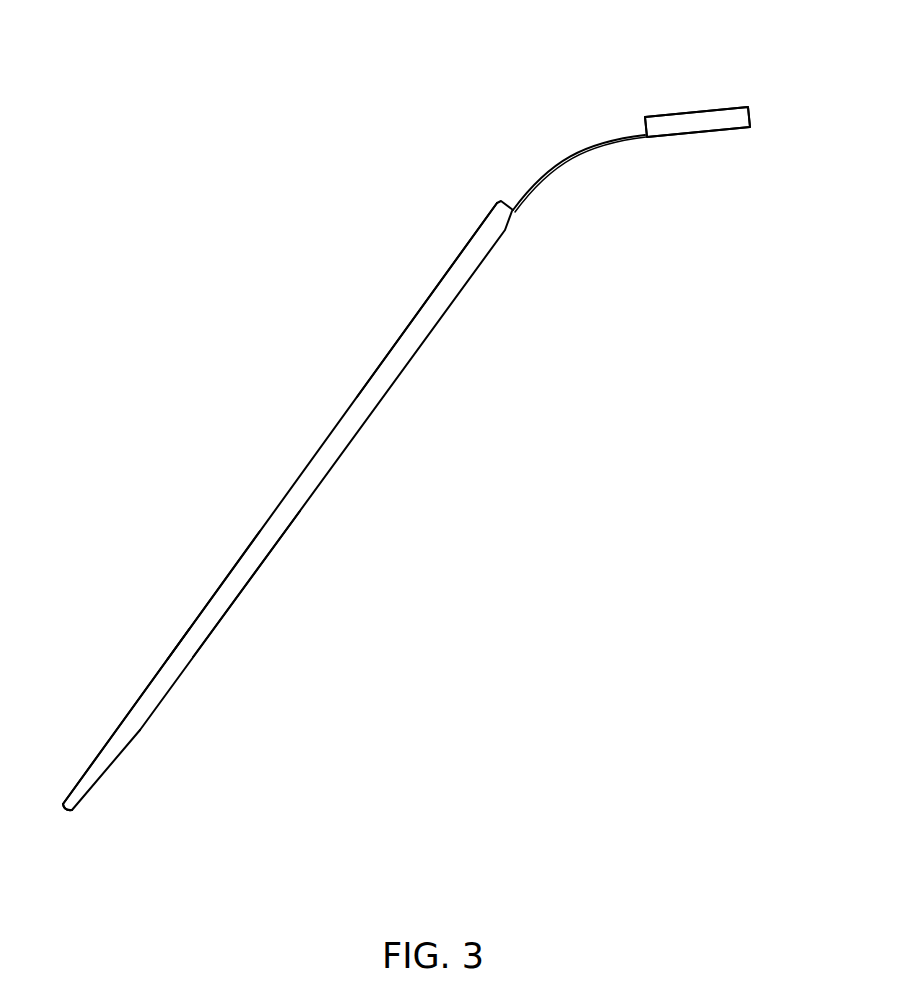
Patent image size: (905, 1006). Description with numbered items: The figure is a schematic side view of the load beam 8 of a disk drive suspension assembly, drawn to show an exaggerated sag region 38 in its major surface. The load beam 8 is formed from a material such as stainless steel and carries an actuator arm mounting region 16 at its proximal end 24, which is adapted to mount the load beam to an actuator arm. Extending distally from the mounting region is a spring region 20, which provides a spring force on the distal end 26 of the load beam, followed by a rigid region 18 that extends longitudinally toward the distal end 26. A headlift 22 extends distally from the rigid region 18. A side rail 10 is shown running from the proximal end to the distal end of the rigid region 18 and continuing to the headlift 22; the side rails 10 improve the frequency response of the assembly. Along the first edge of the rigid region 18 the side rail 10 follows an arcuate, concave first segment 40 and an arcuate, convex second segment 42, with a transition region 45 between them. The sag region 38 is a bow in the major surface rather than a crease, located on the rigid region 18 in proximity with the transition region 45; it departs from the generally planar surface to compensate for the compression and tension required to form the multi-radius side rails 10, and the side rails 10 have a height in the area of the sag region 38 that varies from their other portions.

The load beam 8 is at (428, 428).
The side rails 10 is at (307, 467).
The actuator arm mounting region 16 is at (695, 108).
The rigid region 18 is at (427, 335).
The spring region 20 is at (577, 148).
The headlift 22 is at (83, 782).
The proximal end 24 is at (765, 117).
The distal end 26 is at (62, 818).
The sag region 38 is at (227, 610).
The first segment 40 is at (432, 310).
The second segment 42 is at (143, 700).
The transition region 45 is at (203, 622).